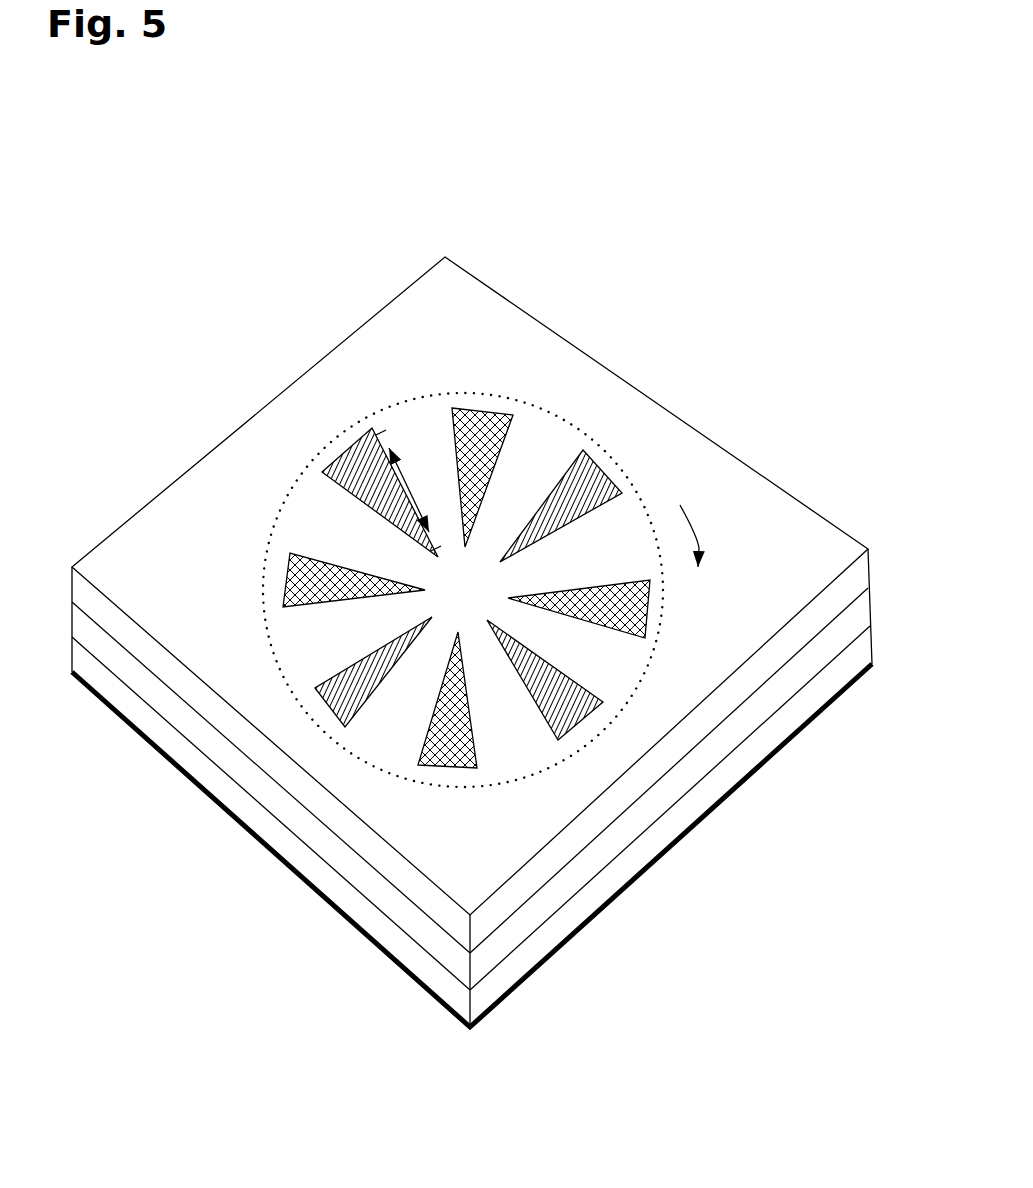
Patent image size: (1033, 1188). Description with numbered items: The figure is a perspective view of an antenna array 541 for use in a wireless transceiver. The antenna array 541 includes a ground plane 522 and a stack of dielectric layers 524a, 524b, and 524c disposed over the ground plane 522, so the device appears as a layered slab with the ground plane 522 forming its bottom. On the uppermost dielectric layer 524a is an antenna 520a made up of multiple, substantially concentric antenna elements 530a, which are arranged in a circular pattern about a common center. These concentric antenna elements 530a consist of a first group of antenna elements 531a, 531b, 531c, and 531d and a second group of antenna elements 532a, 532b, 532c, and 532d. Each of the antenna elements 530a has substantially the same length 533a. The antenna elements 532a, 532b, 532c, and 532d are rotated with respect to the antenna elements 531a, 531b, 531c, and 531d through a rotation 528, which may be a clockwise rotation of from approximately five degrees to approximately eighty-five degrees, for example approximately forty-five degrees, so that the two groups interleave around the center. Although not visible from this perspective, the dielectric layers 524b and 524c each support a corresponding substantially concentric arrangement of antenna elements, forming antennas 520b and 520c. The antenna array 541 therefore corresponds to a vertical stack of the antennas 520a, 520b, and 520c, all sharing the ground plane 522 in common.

The antenna array 541 is at (702, 283).
The antenna 520a is at (210, 570).
The antenna 520b is at (124, 674).
The antenna 520c is at (192, 768).
The ground plane 522 is at (292, 866).
The dielectric layer 524a is at (730, 690).
The dielectric layer 524b is at (640, 820).
The dielectric layer 524c is at (555, 928).
The rotation 528 is at (699, 545).
The substantially concentric antenna elements 530a is at (497, 785).
The antenna element 531a is at (338, 449).
The antenna element 531b is at (632, 440).
The antenna element 531c is at (590, 723).
The antenna element 531d is at (327, 708).
The antenna element 532a is at (472, 408).
The antenna element 532b is at (650, 610).
The antenna element 532c is at (432, 772).
The antenna element 532d is at (288, 553).
The length 533a is at (403, 471).